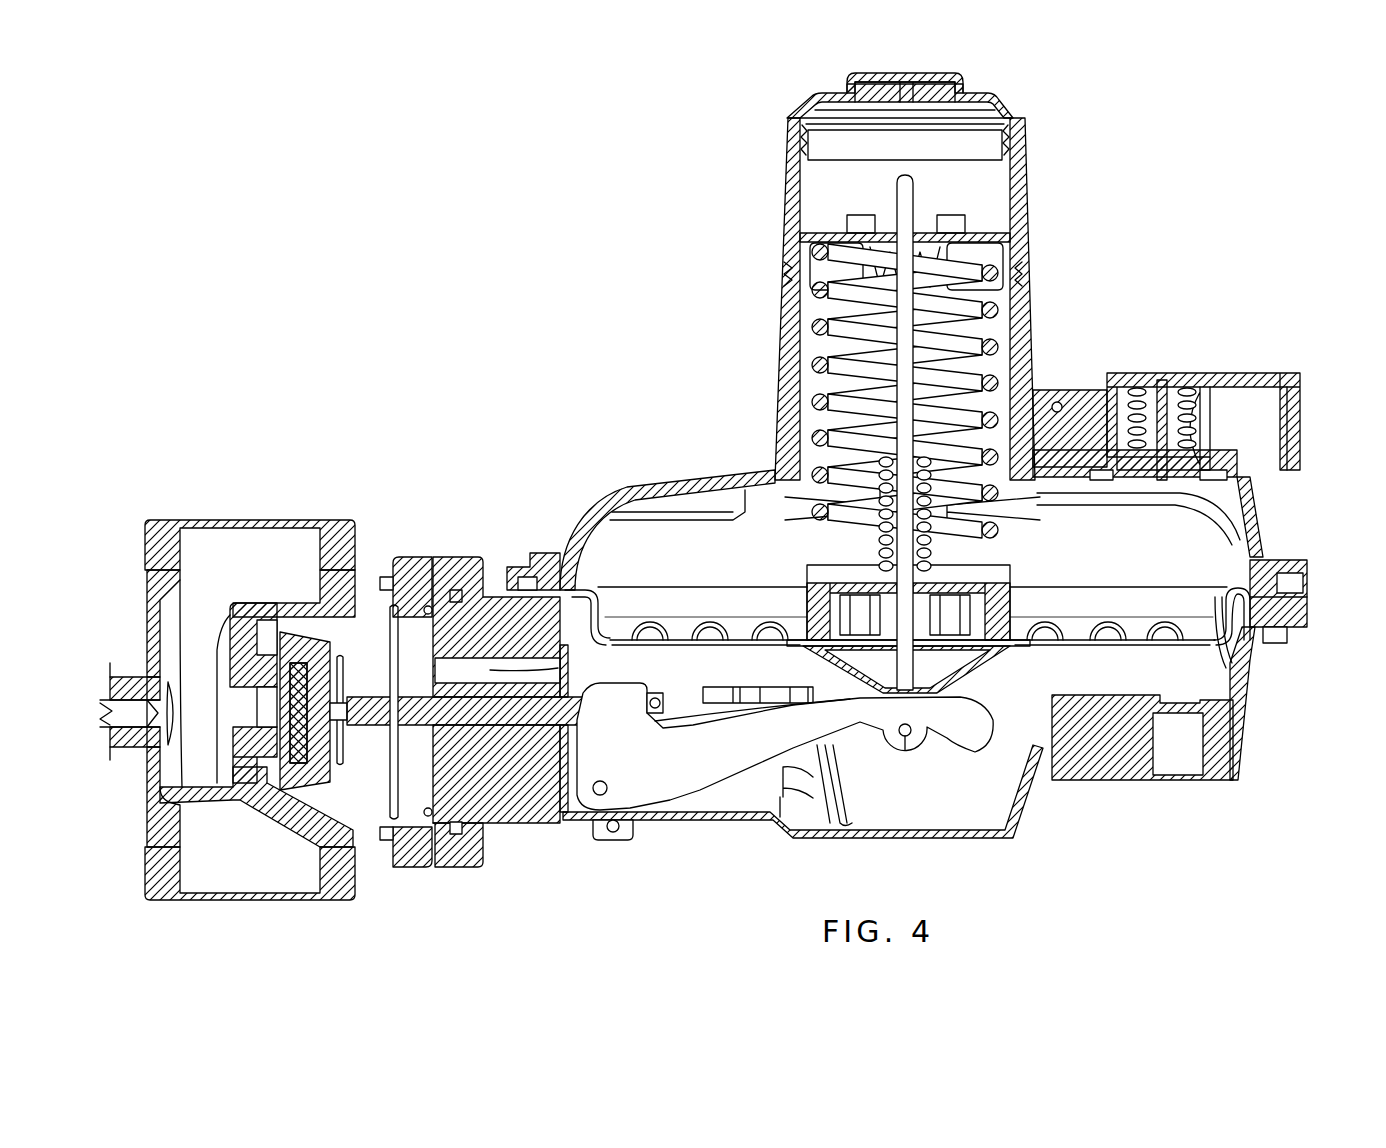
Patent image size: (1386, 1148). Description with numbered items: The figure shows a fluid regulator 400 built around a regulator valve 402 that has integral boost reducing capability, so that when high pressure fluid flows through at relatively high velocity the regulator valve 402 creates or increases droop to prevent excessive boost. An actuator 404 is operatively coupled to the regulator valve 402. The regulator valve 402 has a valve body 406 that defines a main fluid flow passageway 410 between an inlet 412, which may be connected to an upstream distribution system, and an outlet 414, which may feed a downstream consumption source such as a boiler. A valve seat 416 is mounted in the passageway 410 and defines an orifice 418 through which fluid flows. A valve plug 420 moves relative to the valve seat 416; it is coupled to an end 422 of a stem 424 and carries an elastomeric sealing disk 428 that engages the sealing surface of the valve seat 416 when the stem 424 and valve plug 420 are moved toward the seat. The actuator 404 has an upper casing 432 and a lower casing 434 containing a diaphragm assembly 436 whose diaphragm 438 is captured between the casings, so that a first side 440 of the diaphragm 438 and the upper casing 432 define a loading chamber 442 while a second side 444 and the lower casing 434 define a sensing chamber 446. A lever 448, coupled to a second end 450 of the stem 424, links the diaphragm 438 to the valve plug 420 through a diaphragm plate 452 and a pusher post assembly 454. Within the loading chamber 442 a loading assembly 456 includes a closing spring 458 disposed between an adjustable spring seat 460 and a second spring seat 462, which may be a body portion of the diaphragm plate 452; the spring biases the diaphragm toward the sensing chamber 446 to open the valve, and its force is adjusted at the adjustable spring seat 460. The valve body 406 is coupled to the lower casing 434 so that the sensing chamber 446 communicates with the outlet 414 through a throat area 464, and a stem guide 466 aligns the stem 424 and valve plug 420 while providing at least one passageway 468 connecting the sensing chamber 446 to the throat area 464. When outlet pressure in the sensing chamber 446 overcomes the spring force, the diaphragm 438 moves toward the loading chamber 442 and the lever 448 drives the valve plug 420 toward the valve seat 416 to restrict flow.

The fluid regulator 400 is at (452, 112).
The regulator valve 402 is at (202, 442).
The actuator 404 is at (646, 344).
The valve body 406 is at (140, 617).
The main fluid flow passageway 410 is at (315, 856).
The inlet 412 is at (205, 518).
The outlet 414 is at (235, 893).
The valve seat 416 is at (245, 650).
The orifice 418 is at (235, 697).
The valve plug 420 is at (300, 630).
The end of stem 422 is at (410, 603).
The stem 424 is at (485, 803).
The sealing disk 428 is at (290, 722).
The upper casing 432 is at (788, 297).
The lower casing 434 is at (1023, 833).
The diaphragm assembly 436 is at (703, 548).
The diaphragm 438 is at (1258, 551).
The first side of diaphragm 440 is at (1147, 587).
The loading chamber 442 is at (686, 581).
The second side of diaphragm 444 is at (1238, 678).
The sensing chamber 446 is at (738, 686).
The lever 448 is at (813, 733).
The second end of valve stem 450 is at (655, 698).
The diaphragm plate 452 is at (1200, 703).
The pusher post assembly 454 is at (1053, 777).
The loading assembly 456 is at (993, 334).
The closing spring 458 is at (812, 402).
The adjustable spring seat 460 is at (808, 222).
The second spring seat 462 is at (852, 580).
The throat area 464 is at (366, 775).
The stem guide 466 is at (487, 827).
The passageway 468 is at (610, 683).